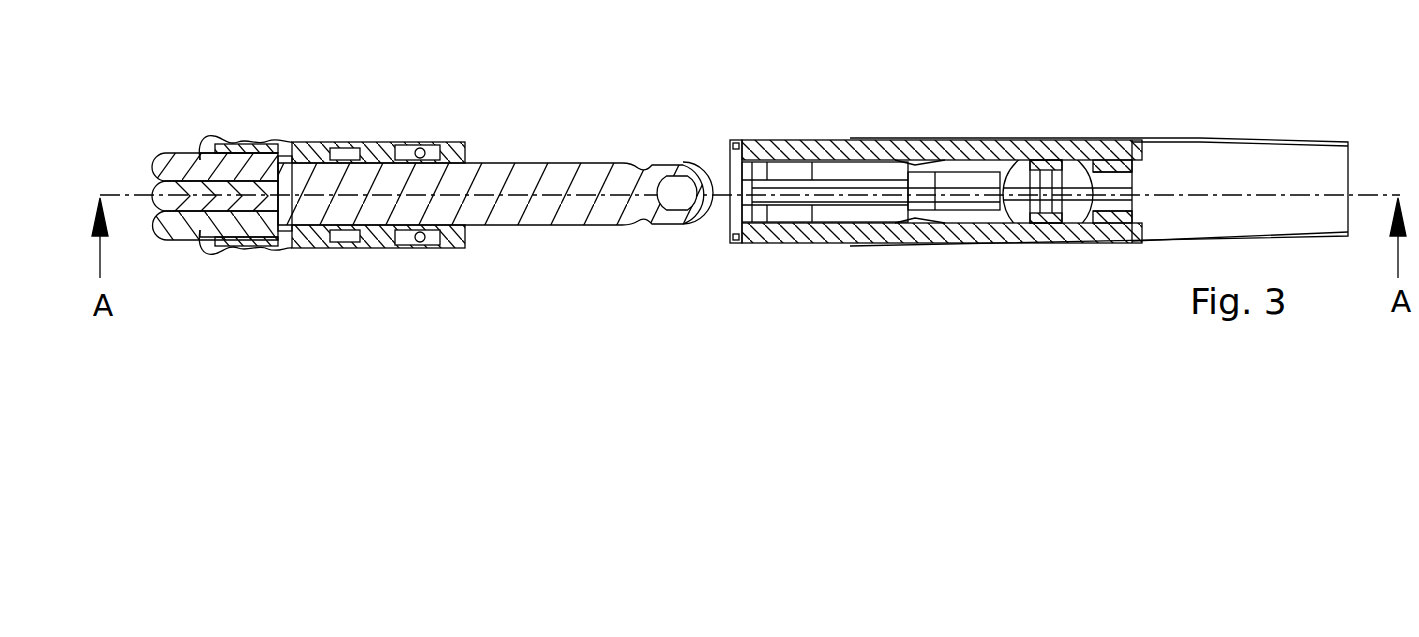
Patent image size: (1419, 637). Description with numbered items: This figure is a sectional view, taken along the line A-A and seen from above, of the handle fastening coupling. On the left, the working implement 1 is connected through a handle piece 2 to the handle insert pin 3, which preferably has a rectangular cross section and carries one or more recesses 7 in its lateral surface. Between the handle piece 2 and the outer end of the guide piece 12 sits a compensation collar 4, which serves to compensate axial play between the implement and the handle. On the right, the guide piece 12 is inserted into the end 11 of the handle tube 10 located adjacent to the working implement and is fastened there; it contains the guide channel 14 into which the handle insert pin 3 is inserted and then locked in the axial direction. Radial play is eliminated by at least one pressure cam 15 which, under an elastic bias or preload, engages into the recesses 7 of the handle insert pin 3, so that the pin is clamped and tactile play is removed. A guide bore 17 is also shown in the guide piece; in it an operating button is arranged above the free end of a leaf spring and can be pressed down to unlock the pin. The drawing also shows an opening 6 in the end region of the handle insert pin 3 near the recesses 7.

The working implement 1 is at (160, 155).
The handle piece 2 is at (383, 142).
The handle insert pin 3 is at (552, 162).
The compensation collar 4 is at (458, 242).
The hole 6 is at (677, 200).
The recess 7 is at (635, 165).
The handle tube 10 is at (1196, 132).
The end of the handle tube 11 is at (1008, 140).
The guide piece 12 is at (777, 140).
The guide channel 14 is at (833, 183).
The pressure cam 15 is at (908, 162).
The guide bore 17 is at (1065, 200).